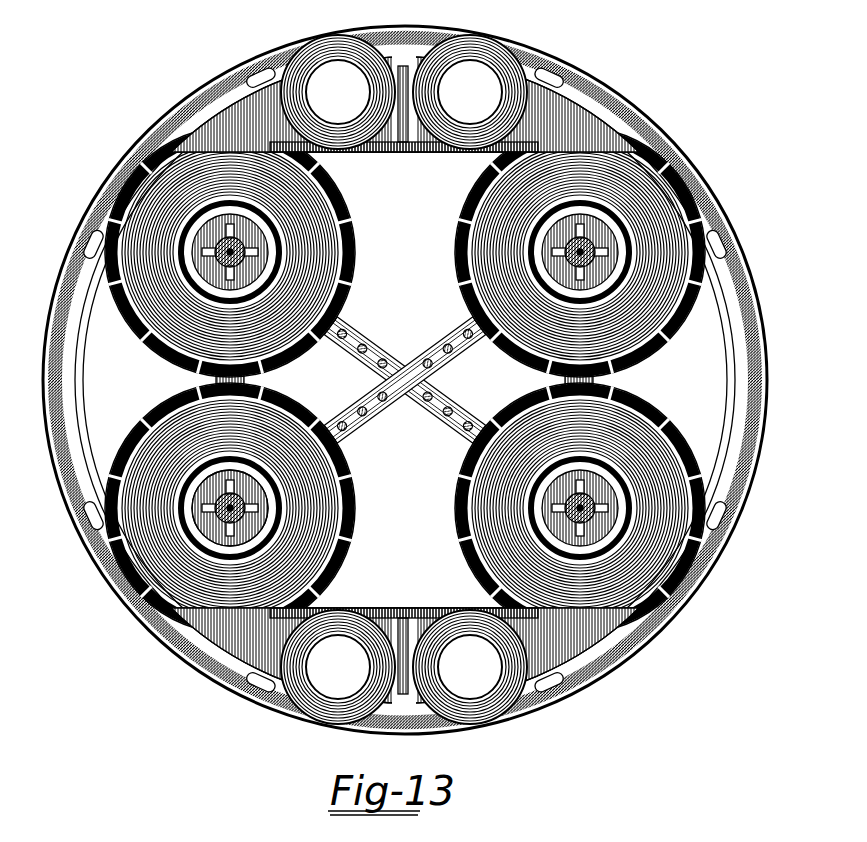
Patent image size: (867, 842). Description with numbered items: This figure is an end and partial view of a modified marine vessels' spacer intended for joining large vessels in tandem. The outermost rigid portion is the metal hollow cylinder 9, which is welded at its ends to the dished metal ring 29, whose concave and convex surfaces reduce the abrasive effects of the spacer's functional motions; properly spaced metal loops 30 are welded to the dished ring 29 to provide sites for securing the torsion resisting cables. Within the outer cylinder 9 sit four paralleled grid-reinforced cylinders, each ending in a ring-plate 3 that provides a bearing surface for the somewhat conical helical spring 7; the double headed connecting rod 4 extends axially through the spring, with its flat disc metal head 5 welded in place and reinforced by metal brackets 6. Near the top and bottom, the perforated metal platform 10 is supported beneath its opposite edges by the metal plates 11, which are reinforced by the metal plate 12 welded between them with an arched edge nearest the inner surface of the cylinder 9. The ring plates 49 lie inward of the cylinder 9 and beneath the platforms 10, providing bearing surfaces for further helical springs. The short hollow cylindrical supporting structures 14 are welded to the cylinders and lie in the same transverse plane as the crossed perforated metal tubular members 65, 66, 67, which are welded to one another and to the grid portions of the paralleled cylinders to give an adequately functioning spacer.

The ring-plate 3 is at (655, 200).
The double headed connecting rod 4 is at (220, 510).
The flat disc metal head 5 is at (613, 532).
The metal bracket 6 is at (213, 520).
The helical spring 7 is at (188, 228).
The metal hollow cylinder 9 is at (577, 110).
The perforated metal platform 10 is at (388, 152).
The metal plate 11 is at (225, 127).
The metal plate 12 is at (406, 77).
The short hollow cylindrical metal supporting structure 14 is at (593, 384).
The dished metal ring 29 is at (642, 113).
The metal loop 30 is at (249, 68).
The ring plate 49 is at (328, 40).
The crossed perforated metal tubular member 65 is at (368, 338).
The crossed perforated metal tubular member 66 is at (447, 396).
The crossed perforated metal tubular member 67 is at (362, 432).